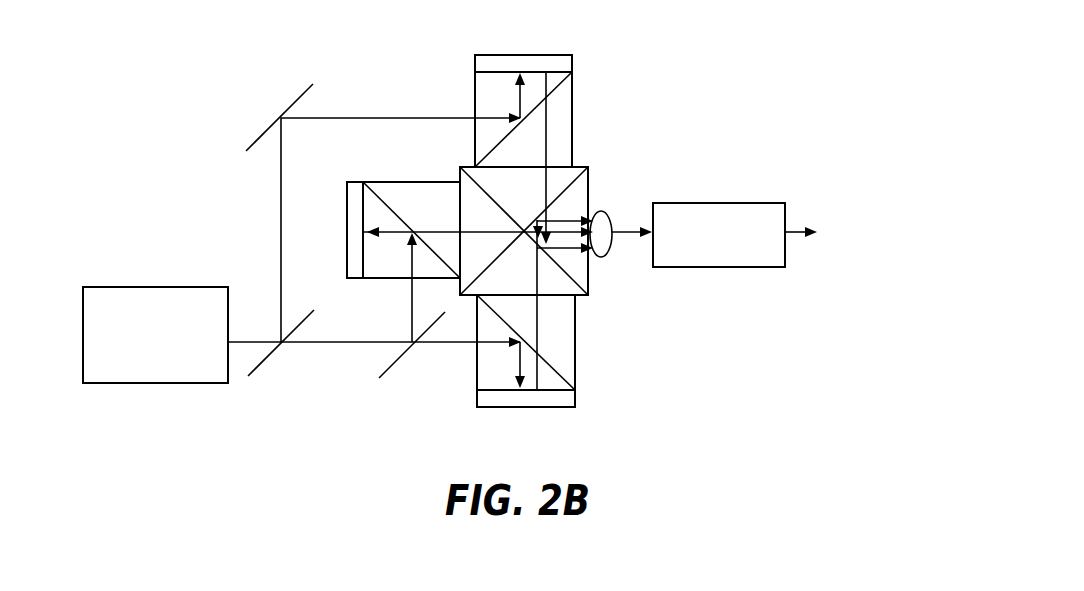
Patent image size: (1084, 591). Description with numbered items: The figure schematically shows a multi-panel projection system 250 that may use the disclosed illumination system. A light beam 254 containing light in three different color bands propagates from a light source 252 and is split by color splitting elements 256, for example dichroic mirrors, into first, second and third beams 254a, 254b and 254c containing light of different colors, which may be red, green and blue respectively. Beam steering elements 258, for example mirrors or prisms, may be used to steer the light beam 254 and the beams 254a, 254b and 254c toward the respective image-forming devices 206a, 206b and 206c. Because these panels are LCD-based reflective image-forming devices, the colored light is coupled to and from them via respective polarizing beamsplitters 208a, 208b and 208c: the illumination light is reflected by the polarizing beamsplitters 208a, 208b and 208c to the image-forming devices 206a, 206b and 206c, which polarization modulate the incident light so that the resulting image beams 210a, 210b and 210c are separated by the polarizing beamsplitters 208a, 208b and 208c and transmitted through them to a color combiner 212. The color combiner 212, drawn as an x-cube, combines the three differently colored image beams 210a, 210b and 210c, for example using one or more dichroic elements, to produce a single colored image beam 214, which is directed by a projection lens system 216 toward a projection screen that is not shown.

The multi-panel projection system 250 is at (178, 142).
The light source 252 is at (155, 383).
The light beam 254 is at (247, 342).
The first beam 254a is at (387, 118).
The second beam 254b is at (455, 345).
The third beam 254c is at (412, 298).
The color splitting elements 256 is at (268, 358).
The beam steering elements 258 is at (293, 102).
The image-forming device 206a is at (515, 55).
The image-forming device 206b is at (530, 407).
The image-forming device 206c is at (347, 226).
The polarizing beamsplitter 208a is at (573, 95).
The polarizing beamsplitter 208b is at (575, 370).
The polarizing beamsplitter 208c is at (392, 182).
The image beam 210a is at (546, 145).
The image beam 210b is at (537, 315).
The image beam 210c is at (442, 232).
The color combiner 212 is at (590, 183).
The colored image beam 214 is at (620, 238).
The projection lens system 216 is at (715, 203).